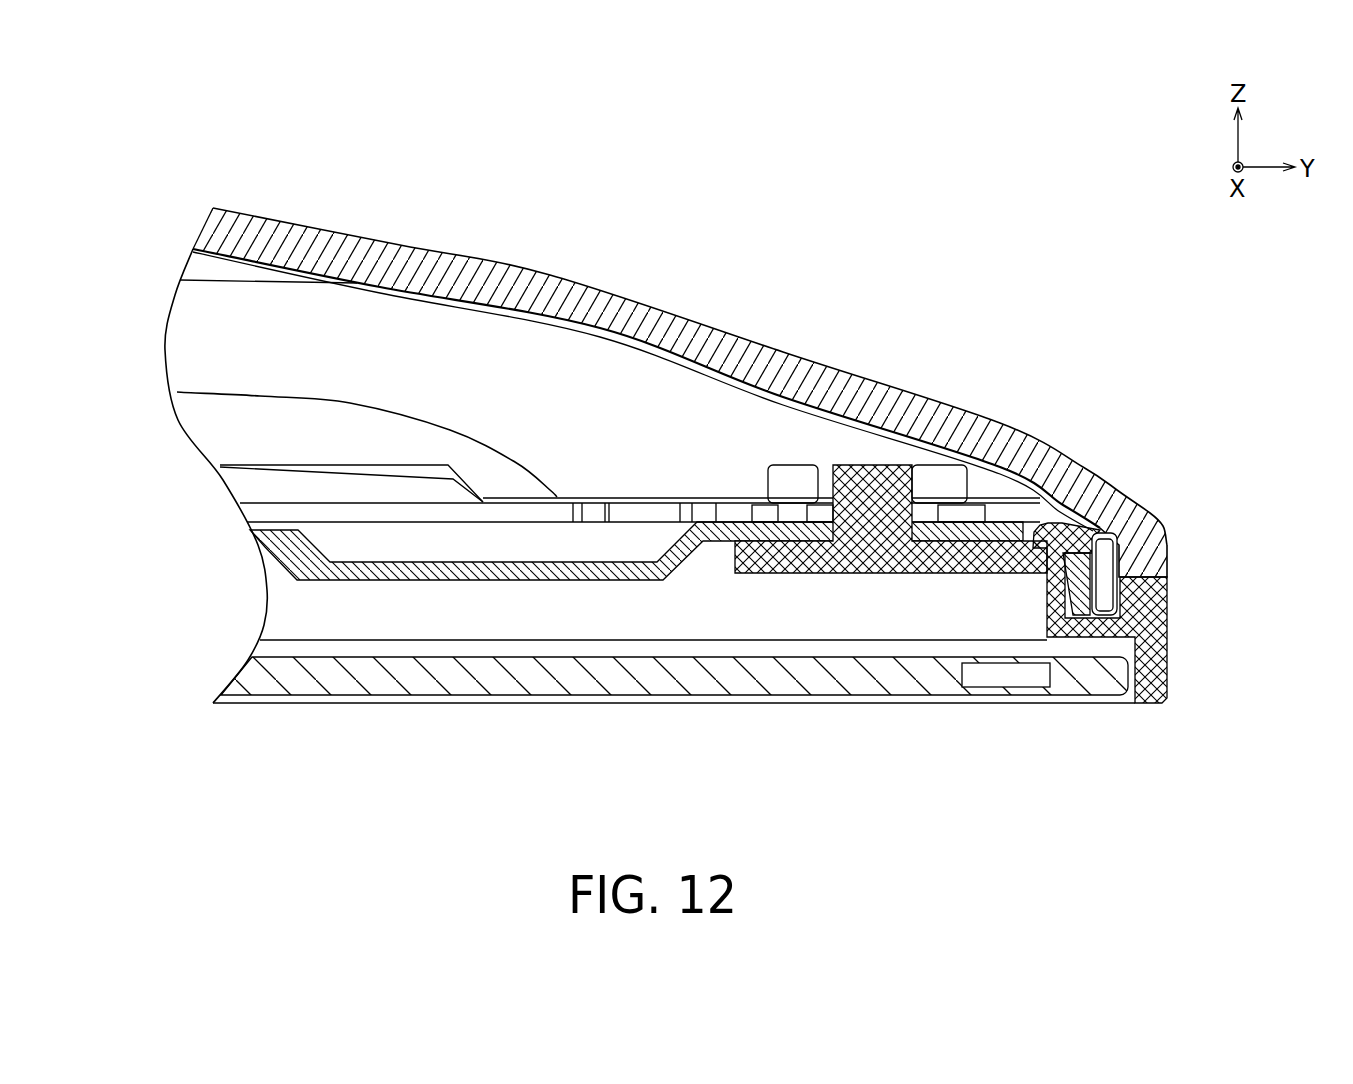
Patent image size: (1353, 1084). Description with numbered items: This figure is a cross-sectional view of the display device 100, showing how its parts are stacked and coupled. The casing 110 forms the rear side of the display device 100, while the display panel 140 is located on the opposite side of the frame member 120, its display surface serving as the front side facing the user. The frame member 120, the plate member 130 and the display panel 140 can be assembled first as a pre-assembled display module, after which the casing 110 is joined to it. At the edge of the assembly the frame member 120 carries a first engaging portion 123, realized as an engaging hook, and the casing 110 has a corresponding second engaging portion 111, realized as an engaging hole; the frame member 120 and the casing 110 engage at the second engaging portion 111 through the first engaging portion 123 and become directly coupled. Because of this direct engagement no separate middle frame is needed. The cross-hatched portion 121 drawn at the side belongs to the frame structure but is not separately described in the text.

The display device 100 is at (748, 141).
The casing 110 is at (675, 327).
The second engaging portion 111 is at (1047, 520).
The frame member 120 is at (180, 393).
The frame body 121 is at (1163, 618).
The first engaging portion 123 is at (1092, 530).
The plate member 130 is at (782, 533).
The display panel 140 is at (487, 673).